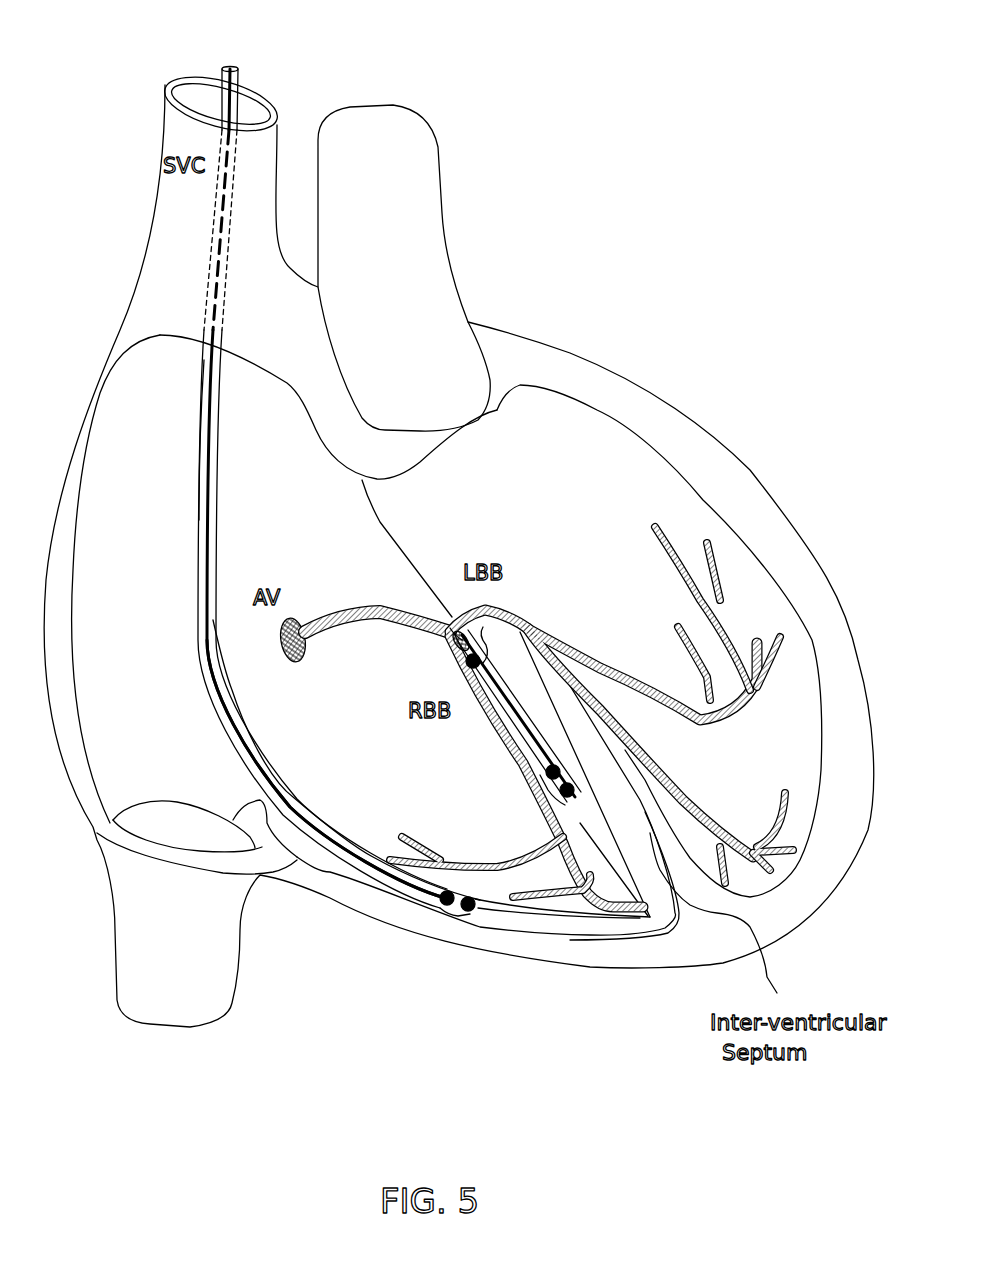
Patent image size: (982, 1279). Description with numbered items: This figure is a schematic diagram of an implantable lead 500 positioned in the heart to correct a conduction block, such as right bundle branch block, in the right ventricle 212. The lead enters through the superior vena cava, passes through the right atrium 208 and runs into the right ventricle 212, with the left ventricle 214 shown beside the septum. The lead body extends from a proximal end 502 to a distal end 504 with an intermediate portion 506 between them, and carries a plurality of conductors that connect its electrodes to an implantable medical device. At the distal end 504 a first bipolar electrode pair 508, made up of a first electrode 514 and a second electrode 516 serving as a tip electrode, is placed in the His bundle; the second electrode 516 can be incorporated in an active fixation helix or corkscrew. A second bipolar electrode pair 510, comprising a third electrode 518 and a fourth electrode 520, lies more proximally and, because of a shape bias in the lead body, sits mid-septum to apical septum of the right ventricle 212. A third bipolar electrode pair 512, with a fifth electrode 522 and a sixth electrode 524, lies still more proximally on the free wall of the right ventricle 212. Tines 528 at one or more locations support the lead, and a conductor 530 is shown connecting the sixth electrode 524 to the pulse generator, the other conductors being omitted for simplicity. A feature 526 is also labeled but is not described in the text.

The implantable lead 500 is at (203, 665).
The proximal end 502 is at (233, 67).
The distal end 504 is at (448, 635).
The intermediate portion 506 is at (367, 877).
The first bipolar electrode pair 508 is at (513, 610).
The second bipolar electrode pair 510 is at (547, 788).
The third bipolar electrode pair 512 is at (455, 917).
The first electrode 514 is at (487, 660).
The second electrode 516 is at (460, 612).
The third electrode 518 is at (547, 767).
The fourth electrode 520 is at (578, 803).
The fifth electrode 522 is at (477, 913).
The sixth electrode 524 is at (440, 907).
The lead body portion 526 is at (207, 408).
The tines 528 is at (588, 937).
The conductor 530 is at (213, 502).
The right atrium 208 is at (190, 536).
The right ventricle 212 is at (400, 815).
The left ventricle 214 is at (773, 796).